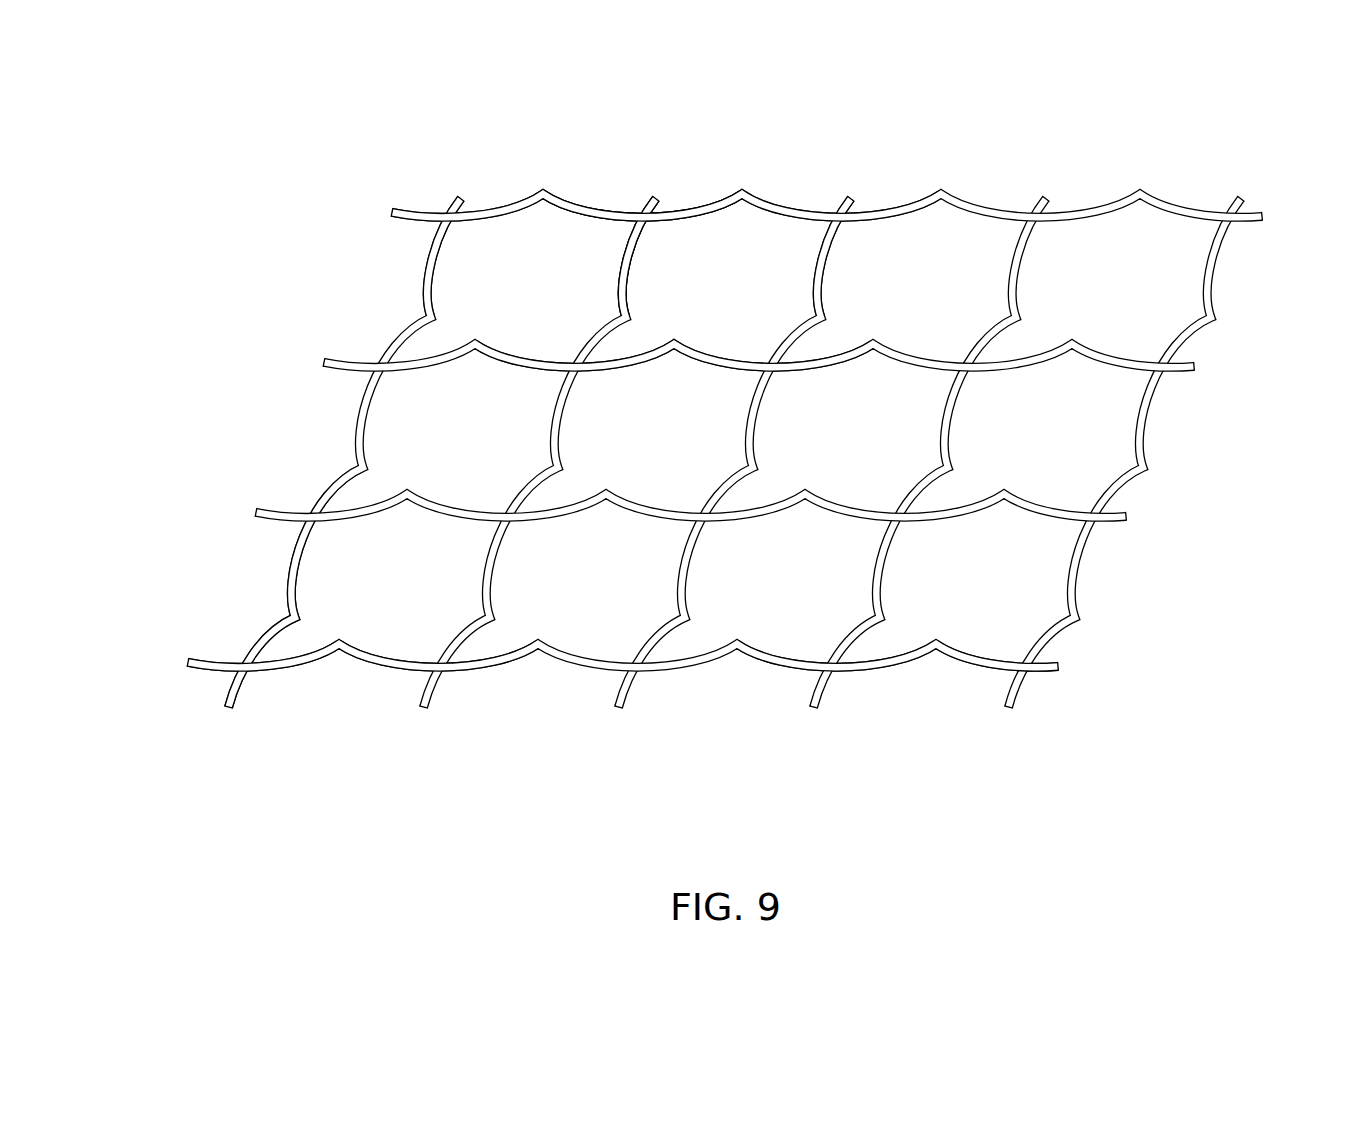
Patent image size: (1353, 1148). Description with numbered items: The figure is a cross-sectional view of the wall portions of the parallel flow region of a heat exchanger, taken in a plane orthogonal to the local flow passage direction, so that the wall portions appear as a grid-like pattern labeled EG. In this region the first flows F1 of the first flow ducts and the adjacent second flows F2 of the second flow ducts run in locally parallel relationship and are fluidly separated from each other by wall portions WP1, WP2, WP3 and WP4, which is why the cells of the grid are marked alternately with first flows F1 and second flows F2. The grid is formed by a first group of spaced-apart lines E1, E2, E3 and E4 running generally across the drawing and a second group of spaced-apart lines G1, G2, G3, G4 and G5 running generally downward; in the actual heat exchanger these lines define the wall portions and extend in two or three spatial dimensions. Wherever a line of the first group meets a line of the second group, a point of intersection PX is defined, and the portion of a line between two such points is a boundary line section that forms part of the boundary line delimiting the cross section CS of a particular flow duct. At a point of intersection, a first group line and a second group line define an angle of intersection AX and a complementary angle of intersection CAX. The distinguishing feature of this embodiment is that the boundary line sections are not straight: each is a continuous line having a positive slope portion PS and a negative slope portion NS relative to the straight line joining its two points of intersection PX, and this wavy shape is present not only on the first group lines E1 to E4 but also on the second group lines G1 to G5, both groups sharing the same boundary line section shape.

The electrode grid EG is at (702, 425).
The points of intersection PX is at (441, 203).
The negative slope portion NS is at (497, 205).
The positive slope portion PS is at (298, 670).
The wall portion WP1 is at (769, 178).
The wall portion WP2 is at (651, 256).
The wall portion WP3 is at (733, 346).
The wall portion WP4 is at (848, 256).
The cross section CS is at (1076, 237).
The first group line E1 is at (1199, 195).
The first group line E2 is at (1131, 332).
The first group line E3 is at (1062, 485).
The first group line E4 is at (992, 637).
The angle of intersection AX is at (1172, 358).
The complementary angle of intersection CAX is at (1165, 384).
The second group line G1 is at (406, 254).
The second group line G2 is at (534, 403).
The second group line G3 is at (663, 596).
The second group line G4 is at (858, 596).
The second group line G5 is at (1073, 652).
The first flows F1 is at (512, 294).
The second flows F2 is at (702, 294).